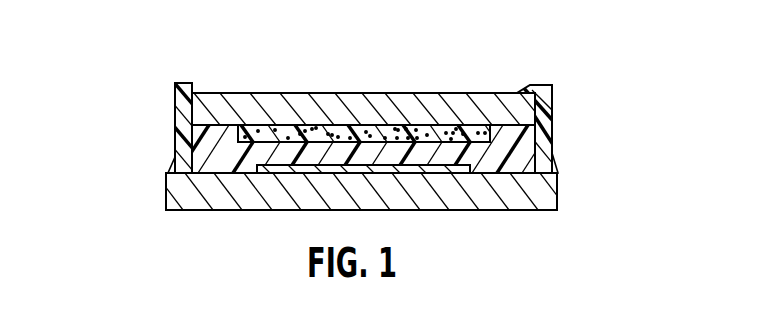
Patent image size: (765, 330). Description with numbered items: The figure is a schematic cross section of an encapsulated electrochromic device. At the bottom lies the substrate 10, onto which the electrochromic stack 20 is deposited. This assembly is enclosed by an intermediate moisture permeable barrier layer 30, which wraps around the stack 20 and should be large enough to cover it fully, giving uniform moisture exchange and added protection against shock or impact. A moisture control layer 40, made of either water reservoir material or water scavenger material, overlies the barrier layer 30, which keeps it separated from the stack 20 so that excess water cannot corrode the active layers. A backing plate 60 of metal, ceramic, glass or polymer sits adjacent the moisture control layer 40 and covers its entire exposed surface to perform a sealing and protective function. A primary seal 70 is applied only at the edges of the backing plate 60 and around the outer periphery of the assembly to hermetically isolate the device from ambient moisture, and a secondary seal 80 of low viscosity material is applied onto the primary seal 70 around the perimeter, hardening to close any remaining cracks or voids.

The substrate 10 is at (467, 208).
The electrochromic stack 20 is at (289, 166).
The intermediate moisture permeable barrier layer 30 is at (227, 132).
The moisture control layer 40 is at (464, 132).
The backing plate 60 is at (366, 100).
The primary seal 70 is at (190, 121).
The secondary seal 80 is at (550, 153).